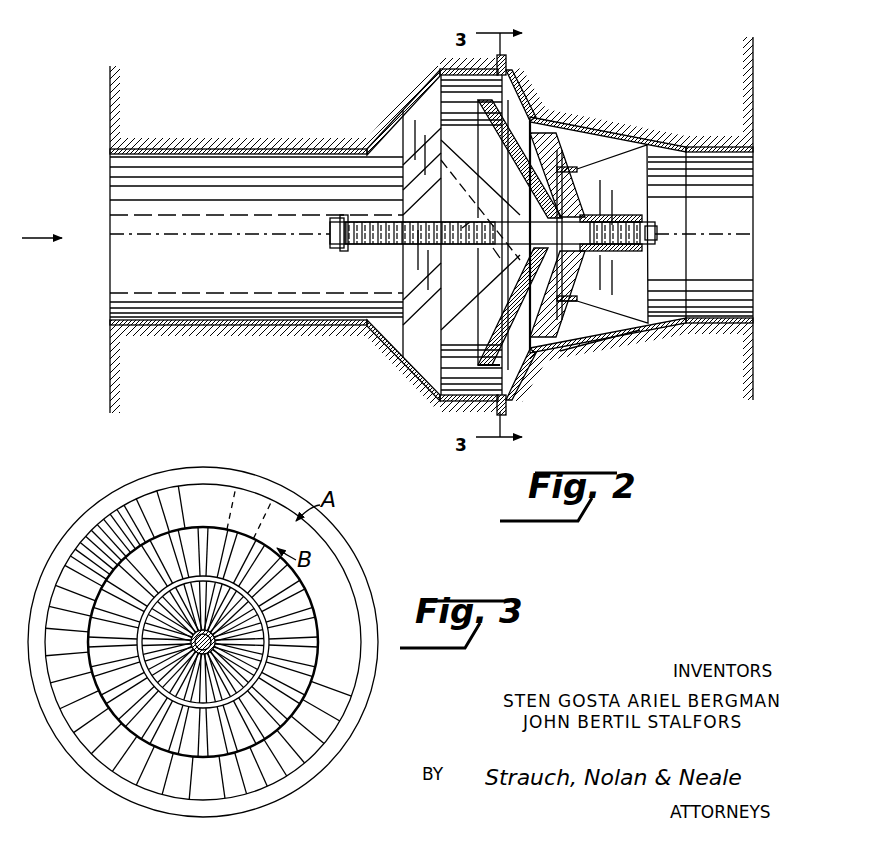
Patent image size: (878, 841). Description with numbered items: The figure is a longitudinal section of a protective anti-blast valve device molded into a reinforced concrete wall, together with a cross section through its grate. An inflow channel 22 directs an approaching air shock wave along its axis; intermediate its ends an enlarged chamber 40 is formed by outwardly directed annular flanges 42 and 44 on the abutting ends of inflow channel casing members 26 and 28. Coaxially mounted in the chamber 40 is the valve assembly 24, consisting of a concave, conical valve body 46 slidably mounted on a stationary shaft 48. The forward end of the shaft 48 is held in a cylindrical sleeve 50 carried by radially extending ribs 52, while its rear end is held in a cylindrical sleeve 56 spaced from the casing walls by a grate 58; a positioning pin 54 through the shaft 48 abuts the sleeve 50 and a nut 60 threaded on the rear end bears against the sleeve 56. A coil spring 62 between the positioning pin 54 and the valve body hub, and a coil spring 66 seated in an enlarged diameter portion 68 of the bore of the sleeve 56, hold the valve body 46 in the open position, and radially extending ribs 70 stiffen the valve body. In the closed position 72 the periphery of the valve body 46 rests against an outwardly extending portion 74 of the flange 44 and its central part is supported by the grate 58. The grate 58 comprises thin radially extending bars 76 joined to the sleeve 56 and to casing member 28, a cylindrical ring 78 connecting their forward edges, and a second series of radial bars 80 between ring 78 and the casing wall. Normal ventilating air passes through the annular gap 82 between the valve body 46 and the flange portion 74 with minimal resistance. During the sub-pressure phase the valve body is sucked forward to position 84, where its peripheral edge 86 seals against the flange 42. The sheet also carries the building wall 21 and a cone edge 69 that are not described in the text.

In FIG. 2, the pipe wall 21 is at (217, 146).
In FIG. 2, the inflow channel 22 is at (116, 178).
In FIG. 2, the valve assembly 24 is at (418, 142).
In FIG. 2, the inflow channel casing member 26 is at (300, 146).
In FIG. 2, the inflow channel casing member 28 is at (606, 124).
In FIG. 3, the inflow channel casing member 28 is at (62, 552).
In FIG. 2, the enlarged chamber 40 is at (441, 70).
In FIG. 2, the annular flange 42 is at (408, 100).
In FIG. 2, the annular flange 44 is at (482, 62).
In FIG. 2, the valve body 46 is at (518, 170).
In FIG. 2, the shaft 48 is at (331, 236).
In FIG. 3, the shaft 48 is at (300, 648).
In FIG. 2, the cylindrical sleeve 50 is at (350, 246).
In FIG. 2, the radially extending ribs 52 is at (385, 290).
In FIG. 2, the positioning pin 54 is at (340, 247).
In FIG. 2, the cylindrical sleeve 56 is at (586, 216).
In FIG. 3, the cylindrical sleeve 56 is at (200, 760).
In FIG. 2, the grate 58 is at (650, 258).
In FIG. 3, the grate 58 is at (86, 600).
In FIG. 2, the nut 60 is at (640, 210).
In FIG. 2, the coil spring 62 is at (462, 228).
In FIG. 2, the coil spring 66 is at (571, 294).
In FIG. 2, the enlarged diameter portion 68 is at (608, 250).
In FIG. 3, the enlarged diameter portion 68 is at (232, 748).
In FIG. 2, the cone edge 69 is at (493, 248).
In FIG. 2, the radially extending ribs 70 is at (520, 270).
In FIG. 2, the closed position 72 is at (533, 352).
In FIG. 2, the outwardly extending portion 74 is at (510, 65).
In FIG. 3, the outwardly extending portion 74 is at (100, 755).
In FIG. 2, the radially extending bars 76 is at (645, 170).
In FIG. 3, the radially extending bars 76 is at (302, 608).
In FIG. 2, the cylindrical ring 78 is at (570, 300).
In FIG. 3, the cylindrical ring 78 is at (160, 740).
In FIG. 2, the second series of radial bars 80 is at (590, 340).
In FIG. 3, the second series of radial bars 80 is at (90, 695).
In FIG. 2, the annular gap 82 is at (536, 100).
In FIG. 2, the forward position 84 is at (385, 358).
In FIG. 2, the peripheral edge 86 is at (488, 368).